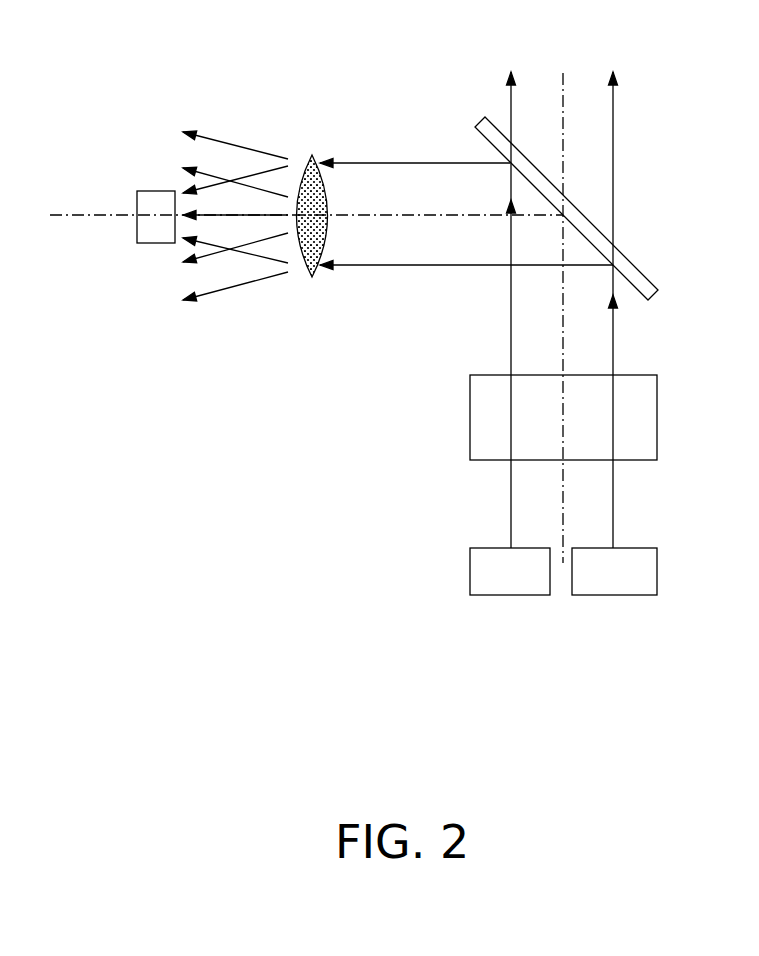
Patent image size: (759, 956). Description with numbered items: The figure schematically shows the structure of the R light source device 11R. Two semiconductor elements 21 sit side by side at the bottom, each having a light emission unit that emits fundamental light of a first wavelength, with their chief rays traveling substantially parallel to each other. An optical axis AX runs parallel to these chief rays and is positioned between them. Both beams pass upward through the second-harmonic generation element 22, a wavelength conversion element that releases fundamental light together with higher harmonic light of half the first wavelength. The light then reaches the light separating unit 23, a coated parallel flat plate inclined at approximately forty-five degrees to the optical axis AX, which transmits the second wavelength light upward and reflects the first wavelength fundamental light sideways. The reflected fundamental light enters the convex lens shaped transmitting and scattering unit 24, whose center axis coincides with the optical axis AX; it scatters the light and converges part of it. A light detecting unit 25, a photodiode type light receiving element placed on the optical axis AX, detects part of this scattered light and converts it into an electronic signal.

The R light source device 11R is at (396, 70).
The semiconductor element 21 is at (602, 583).
The second-harmonic generation (SHG) element 22 is at (643, 415).
The light separating unit 23 is at (640, 273).
The transmitting and scattering unit 24 is at (310, 157).
The light detecting unit 25 is at (153, 230).
The optical axis AX is at (75, 215).